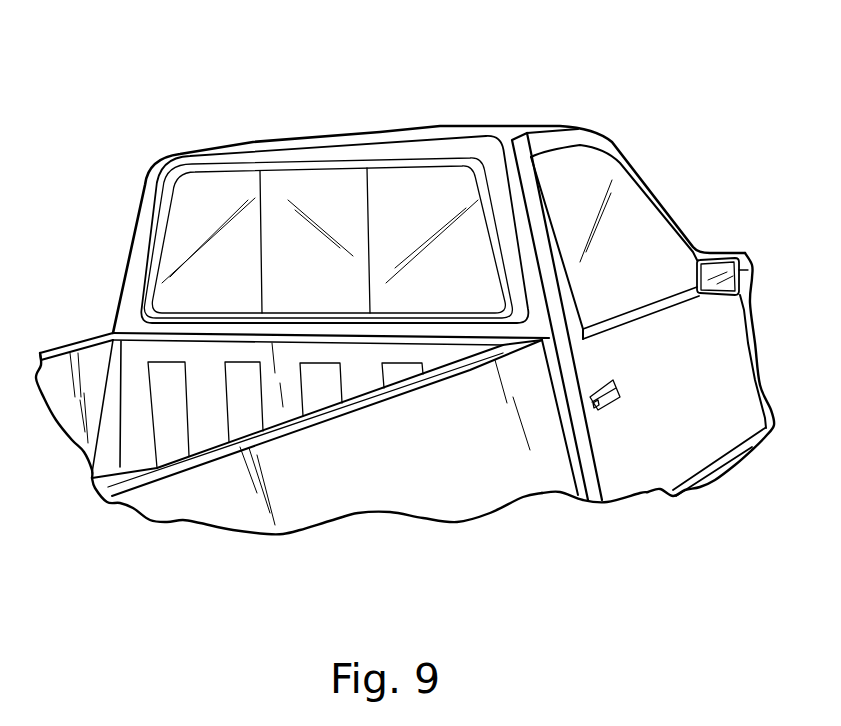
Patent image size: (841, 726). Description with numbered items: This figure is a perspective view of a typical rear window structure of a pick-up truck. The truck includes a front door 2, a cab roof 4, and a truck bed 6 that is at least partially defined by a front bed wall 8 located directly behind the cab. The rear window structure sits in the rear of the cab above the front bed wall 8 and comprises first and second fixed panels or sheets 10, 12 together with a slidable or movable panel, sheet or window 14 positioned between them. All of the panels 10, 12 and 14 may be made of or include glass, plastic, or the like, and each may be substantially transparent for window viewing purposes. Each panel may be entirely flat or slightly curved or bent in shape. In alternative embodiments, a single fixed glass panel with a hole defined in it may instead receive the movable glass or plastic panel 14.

The front door 2 is at (652, 425).
The cab roof 4 is at (483, 117).
The truck bed 6 is at (96, 358).
The front bed wall 8 is at (202, 400).
The first fixed panel 10 is at (230, 190).
The second fixed panel 12 is at (407, 187).
The slidable panel 14 is at (310, 190).